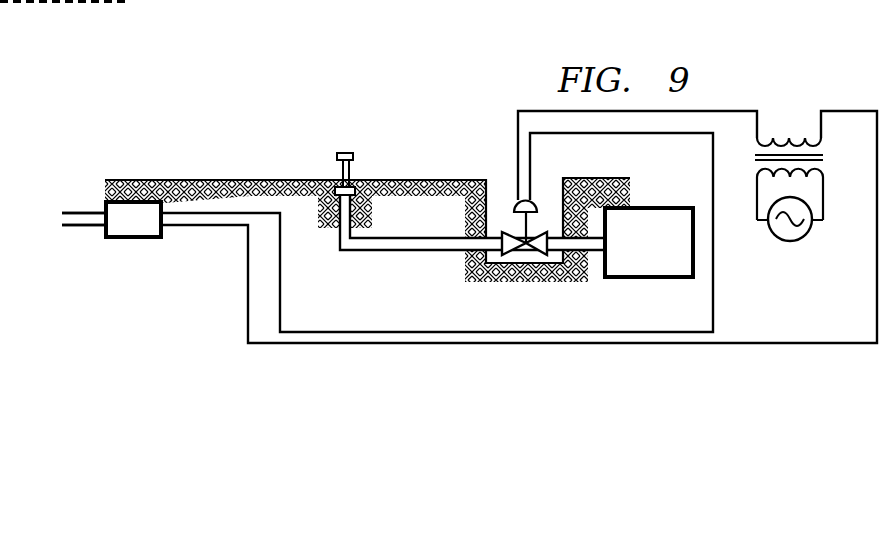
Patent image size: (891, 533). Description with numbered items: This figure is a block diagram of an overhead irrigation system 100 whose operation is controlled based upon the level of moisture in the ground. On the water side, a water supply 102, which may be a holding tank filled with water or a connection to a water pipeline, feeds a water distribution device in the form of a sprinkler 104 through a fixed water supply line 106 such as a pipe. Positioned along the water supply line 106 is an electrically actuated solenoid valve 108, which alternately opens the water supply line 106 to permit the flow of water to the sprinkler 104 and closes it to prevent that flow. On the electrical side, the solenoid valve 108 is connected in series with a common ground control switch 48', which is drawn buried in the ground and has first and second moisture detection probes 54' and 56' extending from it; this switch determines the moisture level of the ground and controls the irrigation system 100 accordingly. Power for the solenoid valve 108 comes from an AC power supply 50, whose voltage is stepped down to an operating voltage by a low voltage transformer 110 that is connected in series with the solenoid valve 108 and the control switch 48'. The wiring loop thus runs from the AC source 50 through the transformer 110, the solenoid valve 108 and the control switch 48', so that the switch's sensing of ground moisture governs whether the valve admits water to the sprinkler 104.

The overhead irrigation system 100 is at (837, 67).
The first moisture detection probe 54' is at (83, 186).
The second moisture detection probe 56' is at (82, 253).
The common ground control switch 48' is at (131, 245).
The sprinkler 104 is at (340, 167).
The water supply line 106 is at (372, 252).
The solenoid valve 108 is at (527, 258).
The water supply 102 is at (652, 207).
The low voltage transformer 110 is at (782, 135).
The AC power supply 50 is at (812, 222).